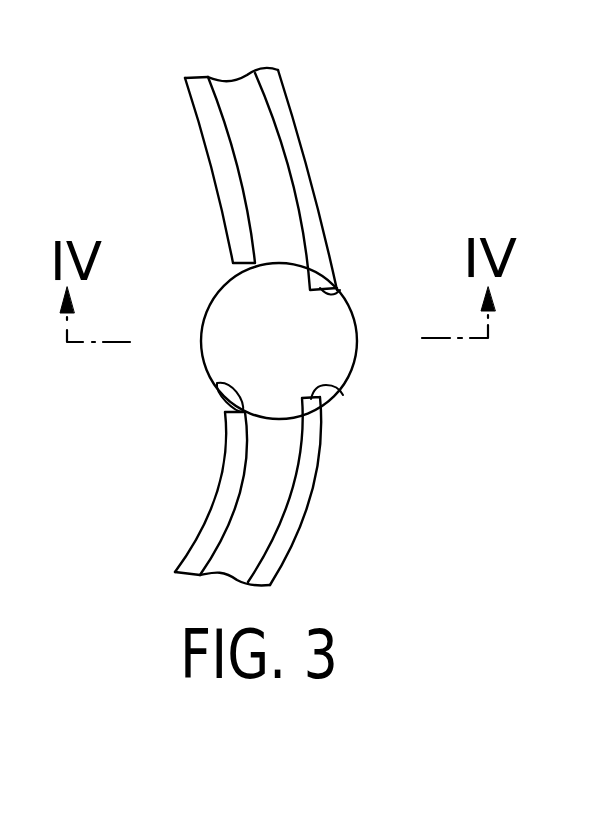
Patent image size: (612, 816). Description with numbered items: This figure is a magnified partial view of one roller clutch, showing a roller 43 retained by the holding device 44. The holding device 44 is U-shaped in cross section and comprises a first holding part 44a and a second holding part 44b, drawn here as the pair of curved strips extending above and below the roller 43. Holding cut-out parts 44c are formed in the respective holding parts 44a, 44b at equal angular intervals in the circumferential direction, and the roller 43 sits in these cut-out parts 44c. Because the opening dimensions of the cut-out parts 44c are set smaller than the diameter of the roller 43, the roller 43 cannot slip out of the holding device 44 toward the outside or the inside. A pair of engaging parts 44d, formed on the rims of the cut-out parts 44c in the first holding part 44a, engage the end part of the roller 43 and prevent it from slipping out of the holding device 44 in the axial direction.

The roller 43 is at (333, 331).
The holding device 44 is at (231, 296).
The first holding part 44a is at (304, 176).
The second holding part 44b is at (213, 128).
The holding cut-out part 44c is at (217, 383).
The engaging part 44d is at (339, 291).